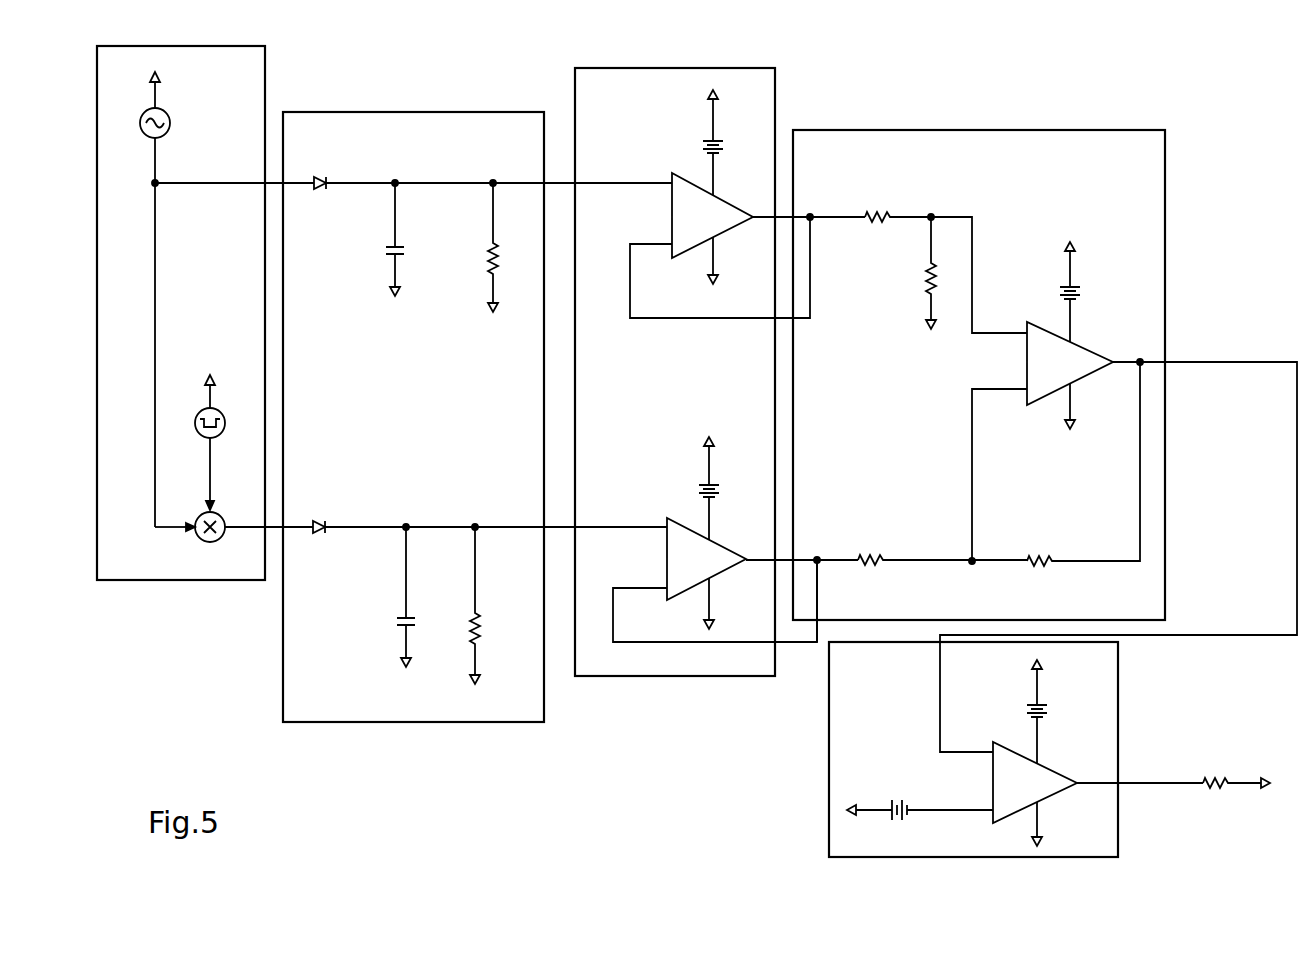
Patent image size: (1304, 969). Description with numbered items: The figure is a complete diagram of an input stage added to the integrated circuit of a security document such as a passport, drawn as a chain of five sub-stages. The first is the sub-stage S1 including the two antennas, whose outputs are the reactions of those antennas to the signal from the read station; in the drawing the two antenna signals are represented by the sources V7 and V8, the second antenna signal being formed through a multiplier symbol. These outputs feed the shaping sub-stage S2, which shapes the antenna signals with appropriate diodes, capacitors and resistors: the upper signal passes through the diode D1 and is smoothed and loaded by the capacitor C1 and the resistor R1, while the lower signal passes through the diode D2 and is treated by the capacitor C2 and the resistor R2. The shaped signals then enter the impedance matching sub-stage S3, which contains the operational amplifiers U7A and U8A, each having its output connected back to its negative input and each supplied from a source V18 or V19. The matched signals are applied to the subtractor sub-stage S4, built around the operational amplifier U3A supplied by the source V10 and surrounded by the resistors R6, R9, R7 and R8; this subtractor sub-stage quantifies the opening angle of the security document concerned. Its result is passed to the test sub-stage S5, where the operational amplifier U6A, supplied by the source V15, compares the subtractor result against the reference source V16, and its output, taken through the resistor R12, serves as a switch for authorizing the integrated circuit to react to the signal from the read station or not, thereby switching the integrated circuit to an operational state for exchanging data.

The sub-stage including the two antennas S1 is at (202, 313).
The shaping sub-stage S2 is at (413, 417).
The impedance matching sub-stage S3 is at (675, 372).
The subtractor sub-stage S4 is at (979, 375).
The test sub-stage S5 is at (973, 749).
The sine voltage source antenna 1 V7 is at (217, 297).
The pulse voltage source V8 is at (234, 455).
The diode D1N4148 D1 is at (343, 184).
The diode D1N4148 D2 is at (345, 552).
The capacitor 100nF C1 is at (408, 242).
The capacitor 100nF C2 is at (404, 601).
The resistor 1K R1 is at (564, 251).
The resistor 1K R2 is at (552, 609).
The operational amplifier LM324 U7A is at (747, 235).
The operational amplifier LM324 U8A is at (735, 569).
The operational amplifier LM324 U3A is at (1118, 525).
The operational amplifier LM324 U6A is at (1055, 785).
The supply voltage source 10V V18 is at (704, 119).
The supply voltage source 10V V19 is at (701, 463).
The supply voltage source 10V V10 is at (1063, 268).
The supply voltage source 10V V15 is at (1029, 689).
The reference voltage source 2V V16 is at (880, 813).
The resistor 100K R6 is at (939, 259).
The resistor 100K R7 is at (922, 586).
The resistor 100K R8 is at (1076, 479).
The resistor 100K R9 is at (903, 273).
The resistor 100K R12 is at (1230, 787).